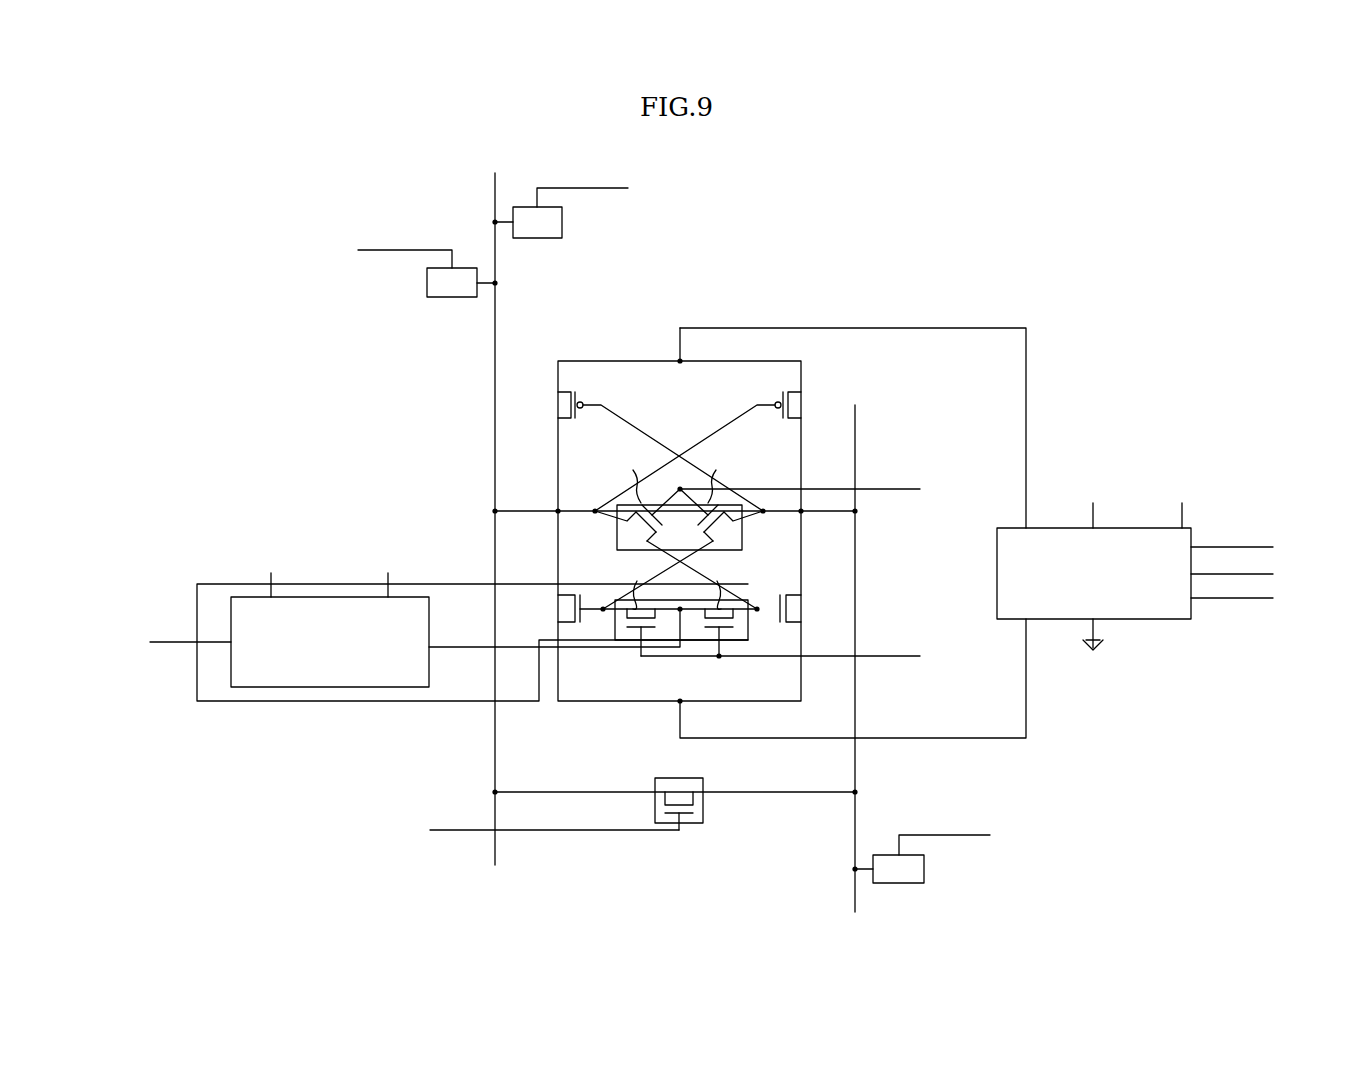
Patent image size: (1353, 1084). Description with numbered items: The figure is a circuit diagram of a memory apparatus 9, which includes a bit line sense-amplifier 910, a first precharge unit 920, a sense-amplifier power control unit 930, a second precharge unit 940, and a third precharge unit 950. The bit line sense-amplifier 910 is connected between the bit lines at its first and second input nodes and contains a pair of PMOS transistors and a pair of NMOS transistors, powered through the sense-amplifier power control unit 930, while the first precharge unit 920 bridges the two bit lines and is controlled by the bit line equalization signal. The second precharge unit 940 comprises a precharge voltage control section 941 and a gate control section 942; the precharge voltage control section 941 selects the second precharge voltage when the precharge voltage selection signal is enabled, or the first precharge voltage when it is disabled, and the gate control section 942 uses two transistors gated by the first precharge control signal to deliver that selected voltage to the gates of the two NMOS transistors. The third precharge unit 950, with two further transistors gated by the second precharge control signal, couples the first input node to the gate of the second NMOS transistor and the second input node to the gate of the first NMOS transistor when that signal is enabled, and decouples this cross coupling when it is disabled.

The memory apparatus 9 is at (278, 336).
The bit line sense-amplifier 910 is at (801, 361).
The first precharge unit 920 is at (703, 808).
The sense-amplifier power control unit 930 is at (1191, 528).
The second precharge unit 940 is at (405, 701).
The precharge voltage control section 941 is at (429, 672).
The gate control section 942 is at (748, 632).
The third precharge unit 950 is at (742, 540).